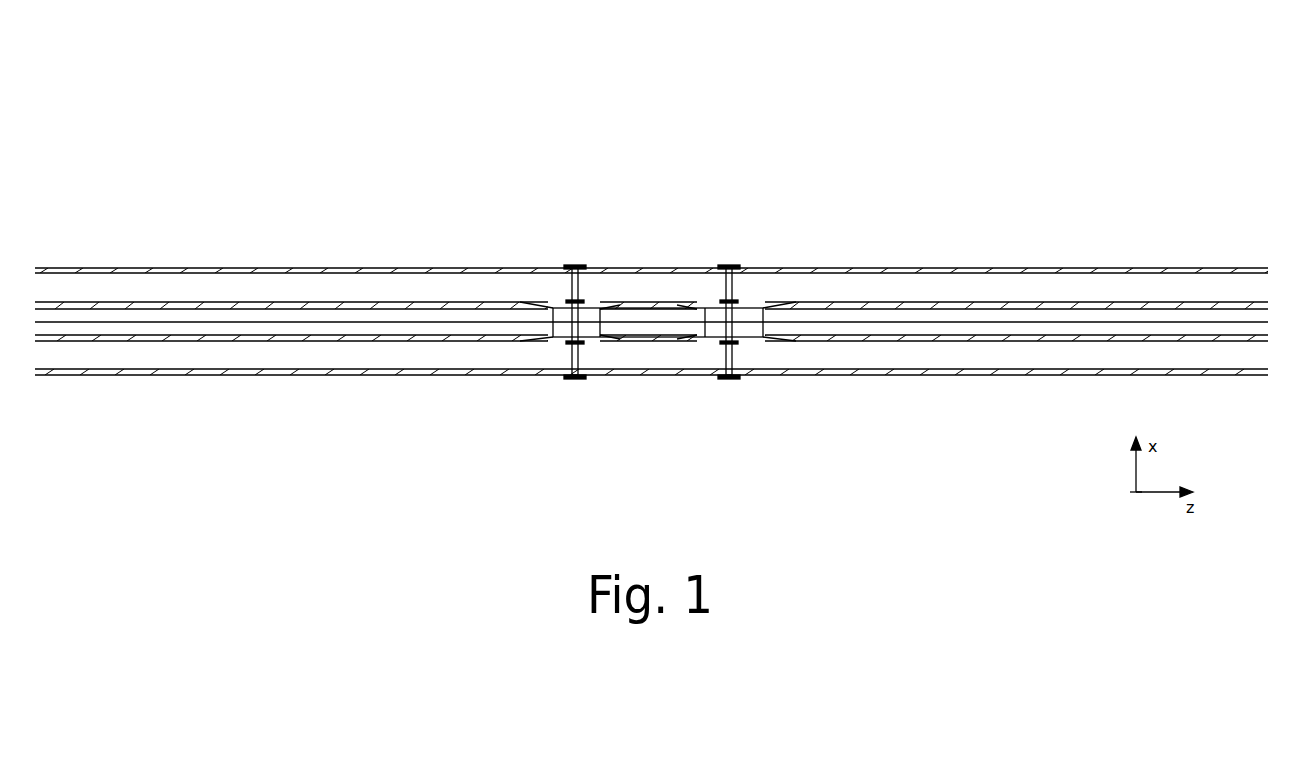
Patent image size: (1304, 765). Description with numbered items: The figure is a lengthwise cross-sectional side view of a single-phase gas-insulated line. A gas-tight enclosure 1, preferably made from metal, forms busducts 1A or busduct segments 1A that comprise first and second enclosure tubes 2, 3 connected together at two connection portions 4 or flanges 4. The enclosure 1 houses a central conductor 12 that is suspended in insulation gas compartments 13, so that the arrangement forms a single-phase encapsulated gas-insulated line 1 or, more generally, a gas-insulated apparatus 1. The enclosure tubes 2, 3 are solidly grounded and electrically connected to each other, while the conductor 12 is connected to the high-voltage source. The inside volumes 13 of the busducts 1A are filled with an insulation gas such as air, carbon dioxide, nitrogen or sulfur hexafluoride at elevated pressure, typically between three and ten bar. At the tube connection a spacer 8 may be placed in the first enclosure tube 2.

The enclosure 1 is at (138, 384).
The busduct 1A is at (192, 242).
The first enclosure tube 2 is at (500, 372).
The second enclosure tube 3 is at (653, 372).
The connection portion 4 is at (565, 387).
The spacer 8 is at (564, 280).
The central conductor 12 is at (272, 285).
The insulation gas compartment 13 is at (342, 279).